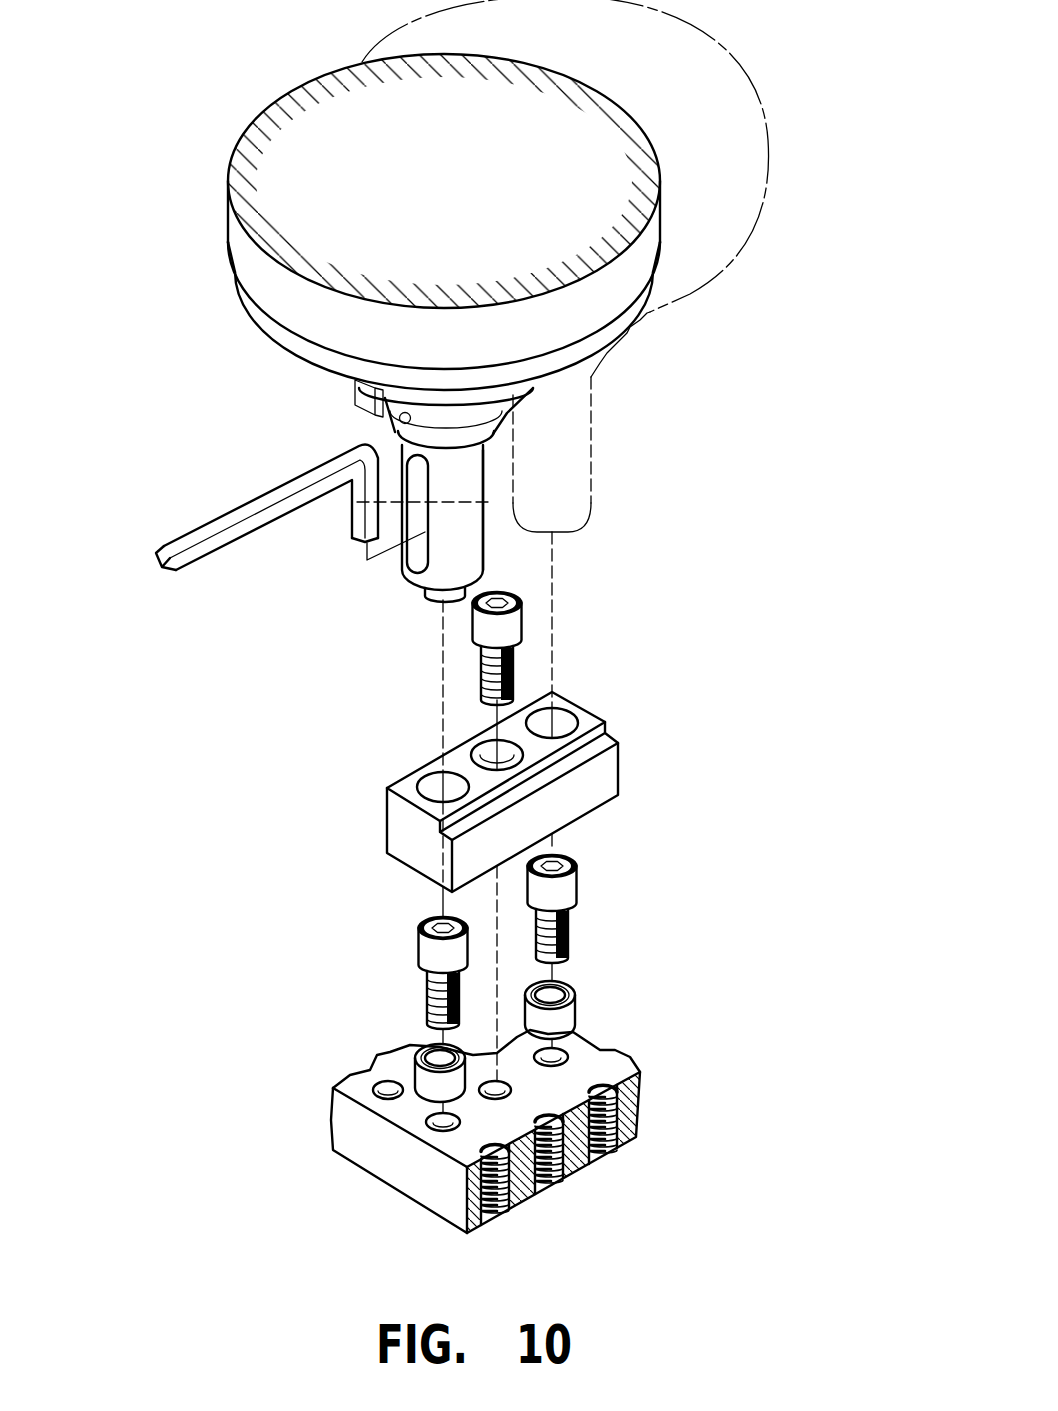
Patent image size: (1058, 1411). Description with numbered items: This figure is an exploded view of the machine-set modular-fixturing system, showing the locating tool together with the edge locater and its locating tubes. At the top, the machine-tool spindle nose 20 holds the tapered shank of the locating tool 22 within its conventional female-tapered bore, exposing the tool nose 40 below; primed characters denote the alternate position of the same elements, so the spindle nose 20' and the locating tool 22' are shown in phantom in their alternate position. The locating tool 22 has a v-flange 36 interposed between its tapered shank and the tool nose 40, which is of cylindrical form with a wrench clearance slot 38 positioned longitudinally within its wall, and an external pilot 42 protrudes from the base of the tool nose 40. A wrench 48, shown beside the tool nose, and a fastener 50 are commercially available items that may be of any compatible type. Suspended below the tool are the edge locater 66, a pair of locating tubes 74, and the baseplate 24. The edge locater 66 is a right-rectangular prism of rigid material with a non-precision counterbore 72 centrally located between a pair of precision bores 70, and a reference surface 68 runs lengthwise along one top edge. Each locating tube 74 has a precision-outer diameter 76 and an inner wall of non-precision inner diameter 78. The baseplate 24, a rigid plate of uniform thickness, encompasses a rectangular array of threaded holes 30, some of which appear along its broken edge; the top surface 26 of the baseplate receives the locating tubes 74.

The machine-tool spindle nose 20 is at (388, 251).
The machine-tool spindle nose (alternate position) 20' is at (625, 188).
The locating tool 22 is at (427, 564).
The locating tool (alternate position) 22' is at (612, 542).
The baseplate 24 is at (500, 1106).
The top surface of base 26 is at (595, 1058).
The threaded holes 30 is at (603, 1143).
The v-flange 36 is at (399, 419).
The wrench clearance slot 38 is at (425, 548).
The tool nose 40 is at (472, 510).
The external pilot 42 is at (437, 597).
The wrench 48 is at (205, 527).
The fastener 50 is at (563, 895).
The edge locater 66 is at (505, 769).
The reference surface 68 is at (608, 728).
The precision bore 70 is at (562, 718).
The non-precision counterbore 72 is at (512, 757).
The locating tube 74 is at (397, 1068).
The precision-outer diameter 76 is at (428, 1088).
The non-precision inner diameter 78 is at (437, 1050).